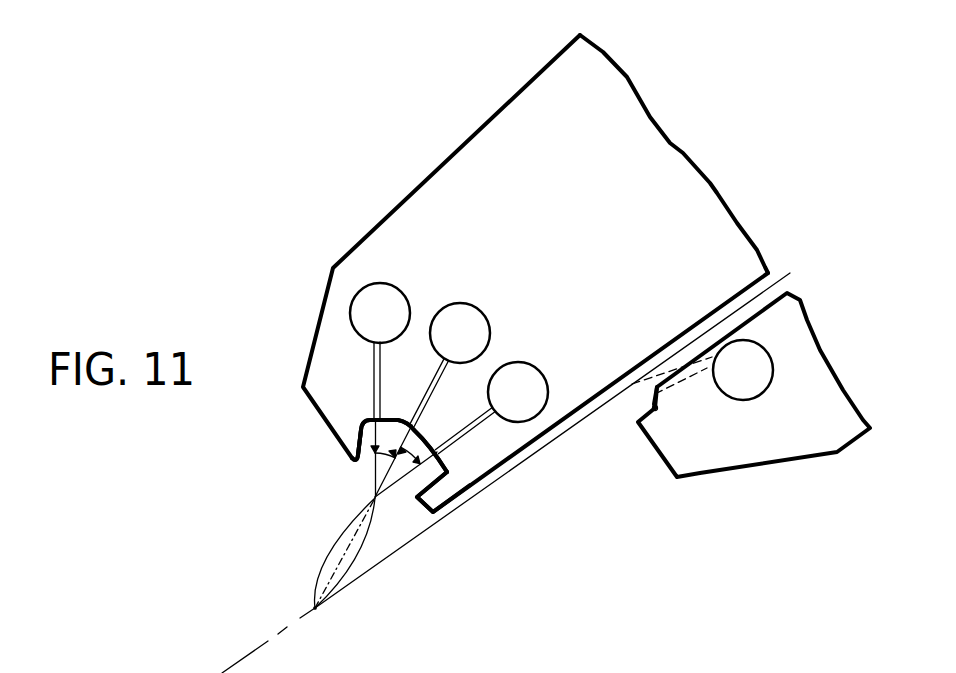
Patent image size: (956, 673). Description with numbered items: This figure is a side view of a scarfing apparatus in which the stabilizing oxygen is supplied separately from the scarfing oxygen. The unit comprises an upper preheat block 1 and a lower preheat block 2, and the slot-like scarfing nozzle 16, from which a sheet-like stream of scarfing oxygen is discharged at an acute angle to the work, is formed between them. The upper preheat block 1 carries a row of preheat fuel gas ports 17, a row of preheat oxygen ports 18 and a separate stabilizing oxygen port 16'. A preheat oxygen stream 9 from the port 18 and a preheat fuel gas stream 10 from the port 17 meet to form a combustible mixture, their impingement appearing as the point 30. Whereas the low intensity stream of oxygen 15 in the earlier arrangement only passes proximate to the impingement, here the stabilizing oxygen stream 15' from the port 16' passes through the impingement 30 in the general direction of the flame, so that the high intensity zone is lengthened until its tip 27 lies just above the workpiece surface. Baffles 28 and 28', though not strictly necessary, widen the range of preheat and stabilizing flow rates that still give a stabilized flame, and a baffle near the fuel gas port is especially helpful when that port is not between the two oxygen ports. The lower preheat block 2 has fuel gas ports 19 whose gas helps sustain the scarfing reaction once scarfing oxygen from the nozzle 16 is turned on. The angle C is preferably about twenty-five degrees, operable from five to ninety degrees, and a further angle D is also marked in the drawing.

The upper preheat block 1 is at (412, 193).
The lower preheat block 2 is at (747, 468).
The preheat oxygen stream 9 is at (375, 475).
The preheat fuel gas stream 10 is at (397, 420).
The low intensity stream of oxygen 15 is at (506, 473).
The stabilizing oxygen stream 15' is at (406, 479).
The scarfing nozzle 16 is at (647, 406).
The stabilizing oxygen port 16' is at (461, 472).
The preheat fuel gas port 17 is at (424, 423).
The preheat oxygen port 18 is at (365, 456).
The fuel gas port 19 is at (657, 409).
The tip of high intensity zone 27 is at (310, 607).
The baffle 28 is at (347, 412).
The baffle 28' is at (592, 406).
The point of impingement 30 is at (372, 497).
The angle C is at (410, 451).
The angle D is at (383, 446).